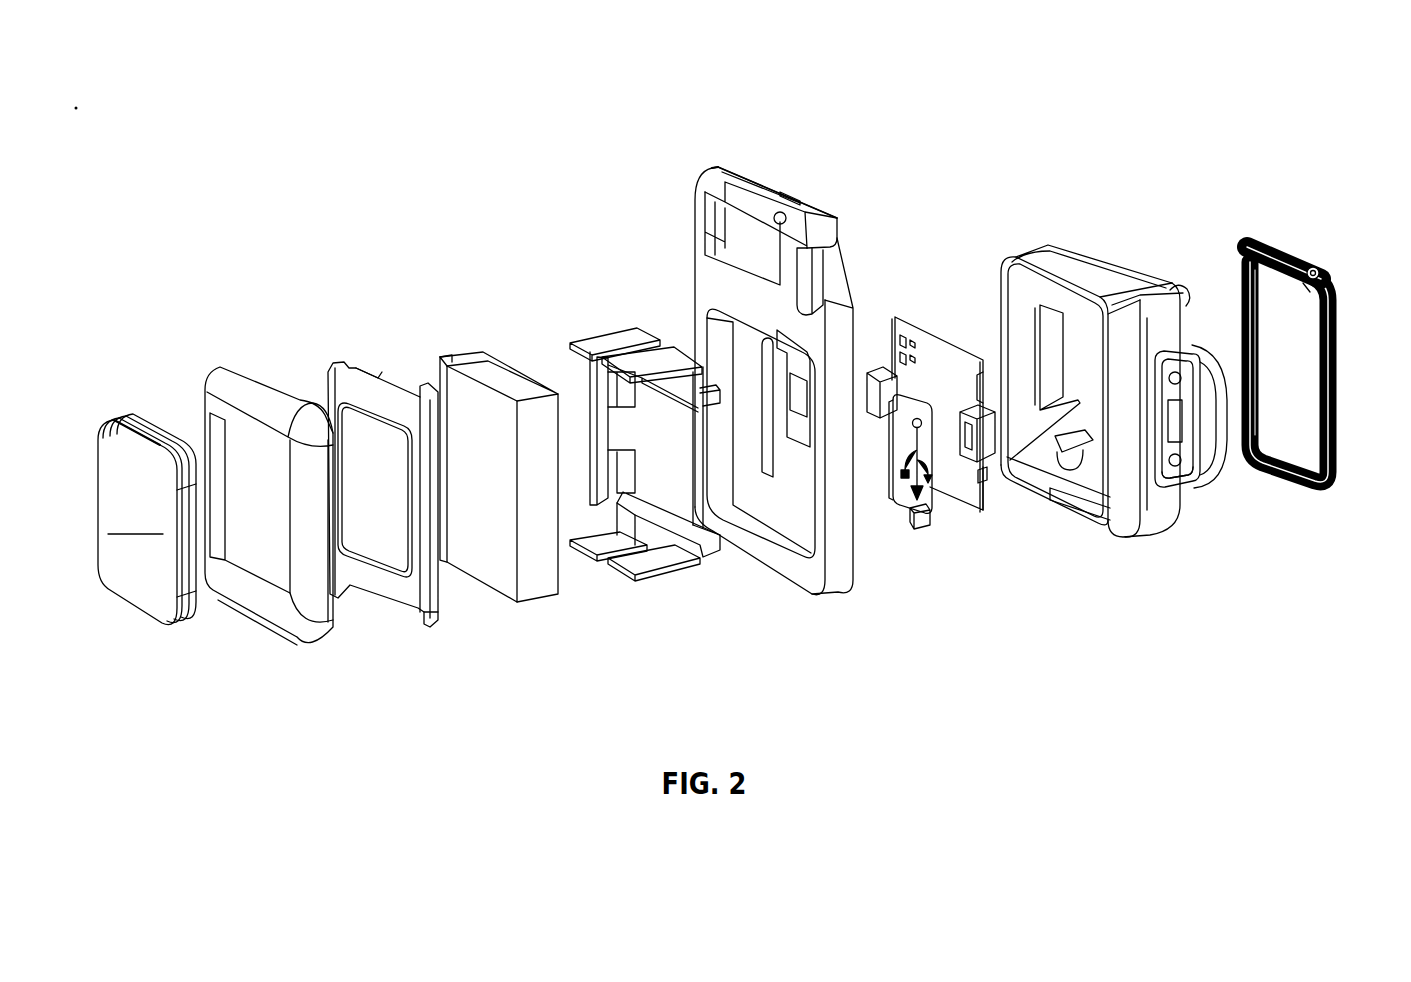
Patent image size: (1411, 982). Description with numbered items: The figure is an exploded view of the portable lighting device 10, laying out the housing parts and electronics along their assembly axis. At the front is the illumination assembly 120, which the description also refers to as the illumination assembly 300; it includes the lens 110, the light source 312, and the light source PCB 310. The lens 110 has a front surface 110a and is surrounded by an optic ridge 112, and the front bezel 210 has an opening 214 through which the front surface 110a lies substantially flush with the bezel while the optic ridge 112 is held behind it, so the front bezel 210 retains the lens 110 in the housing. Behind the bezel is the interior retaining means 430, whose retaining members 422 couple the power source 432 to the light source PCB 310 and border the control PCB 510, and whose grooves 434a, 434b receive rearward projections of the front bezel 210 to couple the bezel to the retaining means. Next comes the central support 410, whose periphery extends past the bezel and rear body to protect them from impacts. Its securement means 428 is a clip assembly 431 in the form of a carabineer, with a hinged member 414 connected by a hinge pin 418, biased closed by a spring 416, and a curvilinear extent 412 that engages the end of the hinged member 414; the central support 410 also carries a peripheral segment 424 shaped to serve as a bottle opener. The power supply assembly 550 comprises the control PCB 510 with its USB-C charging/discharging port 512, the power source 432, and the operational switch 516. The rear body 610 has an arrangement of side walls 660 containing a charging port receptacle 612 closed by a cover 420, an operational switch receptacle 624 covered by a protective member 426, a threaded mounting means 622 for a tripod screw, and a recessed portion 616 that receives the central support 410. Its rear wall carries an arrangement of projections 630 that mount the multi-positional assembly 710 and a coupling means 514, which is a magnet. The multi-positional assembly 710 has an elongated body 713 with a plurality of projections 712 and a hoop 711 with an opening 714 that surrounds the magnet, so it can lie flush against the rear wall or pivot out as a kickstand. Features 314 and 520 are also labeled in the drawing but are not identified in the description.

The portable lighting device 10 is at (355, 150).
The lens 110 is at (113, 483).
The front surface 110a is at (110, 482).
The optic ridge 112 is at (142, 420).
The illumination assembly 120 is at (302, 483).
The front bezel 210 is at (228, 380).
The opening 214 is at (252, 568).
The illumination assembly 300 is at (407, 431).
The light source PCB 310 is at (348, 469).
The light source 312 is at (387, 540).
The bezel tab 314 is at (378, 392).
The central support 410 is at (823, 353).
The curvilinear extent 412 is at (717, 168).
The hinged member 414 is at (760, 178).
The spring 416 is at (775, 180).
The hinge pin 418 is at (795, 202).
The cover 420 is at (912, 530).
The retaining members 422 is at (575, 342).
The peripheral segment 424 is at (832, 270).
The protective member 426 is at (806, 465).
The securement means 428 is at (828, 180).
The interior retaining means 430 is at (608, 433).
The clip assembly 431 is at (828, 180).
The power source 432 is at (538, 582).
The groove 434a is at (642, 348).
The groove 434b is at (657, 540).
The control PCB 510 is at (925, 345).
The charging/discharging port 512 is at (950, 493).
The coupling means 514 is at (1200, 366).
The operational switch 516 is at (883, 370).
The housing assembly 520 is at (1168, 160).
The power supply assembly 550 is at (928, 409).
The rear body 610 is at (1115, 364).
The charging port receptacle 612 is at (1195, 456).
The recessed portion 616 is at (1020, 258).
The mounting means 622 is at (1092, 534).
The operational switch receptacle 624 is at (990, 470).
The arrangement of projections 630 is at (1103, 246).
The arrangement of side walls 660 is at (1065, 262).
The multi-positional assembly 710 is at (1321, 357).
The hoop 711 is at (1338, 472).
The plurality of projections 712 is at (1272, 238).
The elongated body 713 is at (1293, 227).
The opening 714 is at (1318, 267).